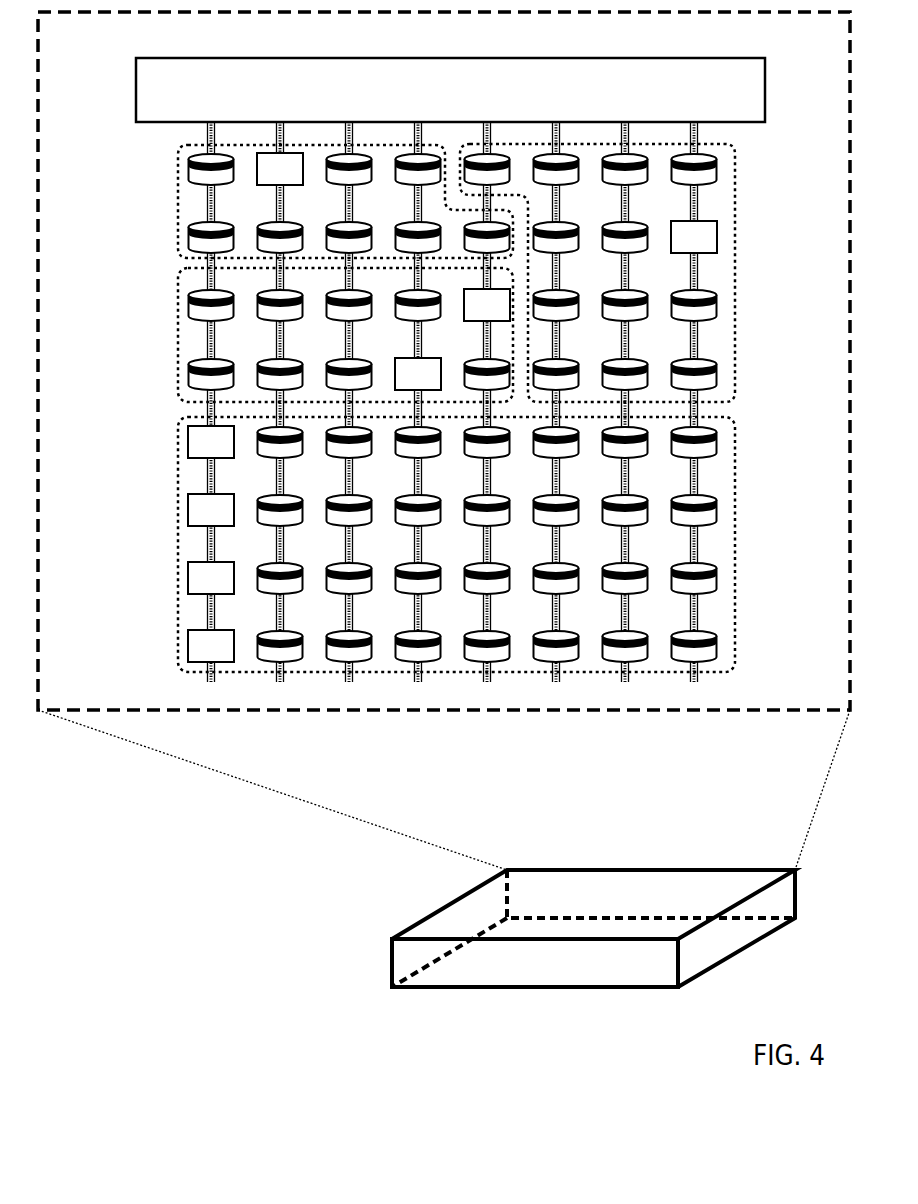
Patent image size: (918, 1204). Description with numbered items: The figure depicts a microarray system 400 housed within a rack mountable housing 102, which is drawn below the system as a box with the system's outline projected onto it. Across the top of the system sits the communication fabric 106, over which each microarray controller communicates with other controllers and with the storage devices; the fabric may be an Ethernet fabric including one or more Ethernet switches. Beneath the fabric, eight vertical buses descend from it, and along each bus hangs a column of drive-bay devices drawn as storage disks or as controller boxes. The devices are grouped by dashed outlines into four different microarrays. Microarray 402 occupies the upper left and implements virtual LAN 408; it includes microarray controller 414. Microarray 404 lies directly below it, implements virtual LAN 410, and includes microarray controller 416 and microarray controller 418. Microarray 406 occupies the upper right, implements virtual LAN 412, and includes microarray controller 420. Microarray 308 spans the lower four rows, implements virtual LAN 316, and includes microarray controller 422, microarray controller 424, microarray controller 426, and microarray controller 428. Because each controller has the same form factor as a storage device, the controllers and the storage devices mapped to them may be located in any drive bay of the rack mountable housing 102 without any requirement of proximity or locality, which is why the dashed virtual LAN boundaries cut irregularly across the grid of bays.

The microarray system 400 is at (243, 45).
The data communications fabric 106 is at (555, 101).
The microarray 402 is at (278, 184).
The microarray 404 is at (287, 333).
The microarray 406 is at (653, 272).
The microarray 308 is at (390, 544).
The virtual LAN 408 is at (175, 200).
The virtual LAN 410 is at (177, 377).
The virtual LAN 412 is at (733, 313).
The virtual LAN 316 is at (734, 547).
The microarray controller 414 is at (292, 178).
The microarray controller 416 is at (500, 314).
The microarray controller 418 is at (430, 383).
The microarray controller 420 is at (706, 246).
The microarray controller 422 is at (224, 451).
The microarray controller 424 is at (224, 519).
The microarray controller 426 is at (224, 587).
The microarray controller 428 is at (224, 655).
The rack mountable housing 102 is at (733, 958).